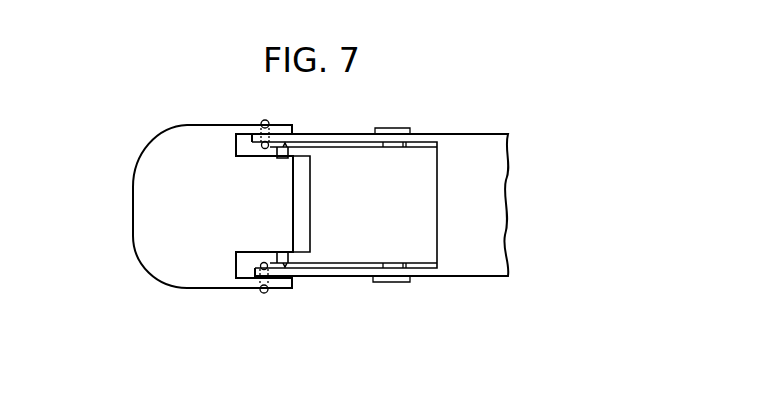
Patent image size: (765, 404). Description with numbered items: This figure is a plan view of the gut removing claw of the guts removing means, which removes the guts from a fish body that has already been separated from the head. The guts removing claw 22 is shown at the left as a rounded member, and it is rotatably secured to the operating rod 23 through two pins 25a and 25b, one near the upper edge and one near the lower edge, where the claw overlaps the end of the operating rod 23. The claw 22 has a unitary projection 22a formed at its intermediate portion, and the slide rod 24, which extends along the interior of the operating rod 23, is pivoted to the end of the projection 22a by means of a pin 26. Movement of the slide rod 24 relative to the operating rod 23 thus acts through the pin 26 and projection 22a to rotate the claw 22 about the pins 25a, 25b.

The guts removing claw 22 is at (160, 203).
The unitary projection 22a is at (265, 207).
The operating rod 23 is at (482, 257).
The slide rod 24 is at (415, 238).
The pin 25a is at (265, 121).
The pin 25b is at (264, 294).
The pin 26 is at (287, 260).